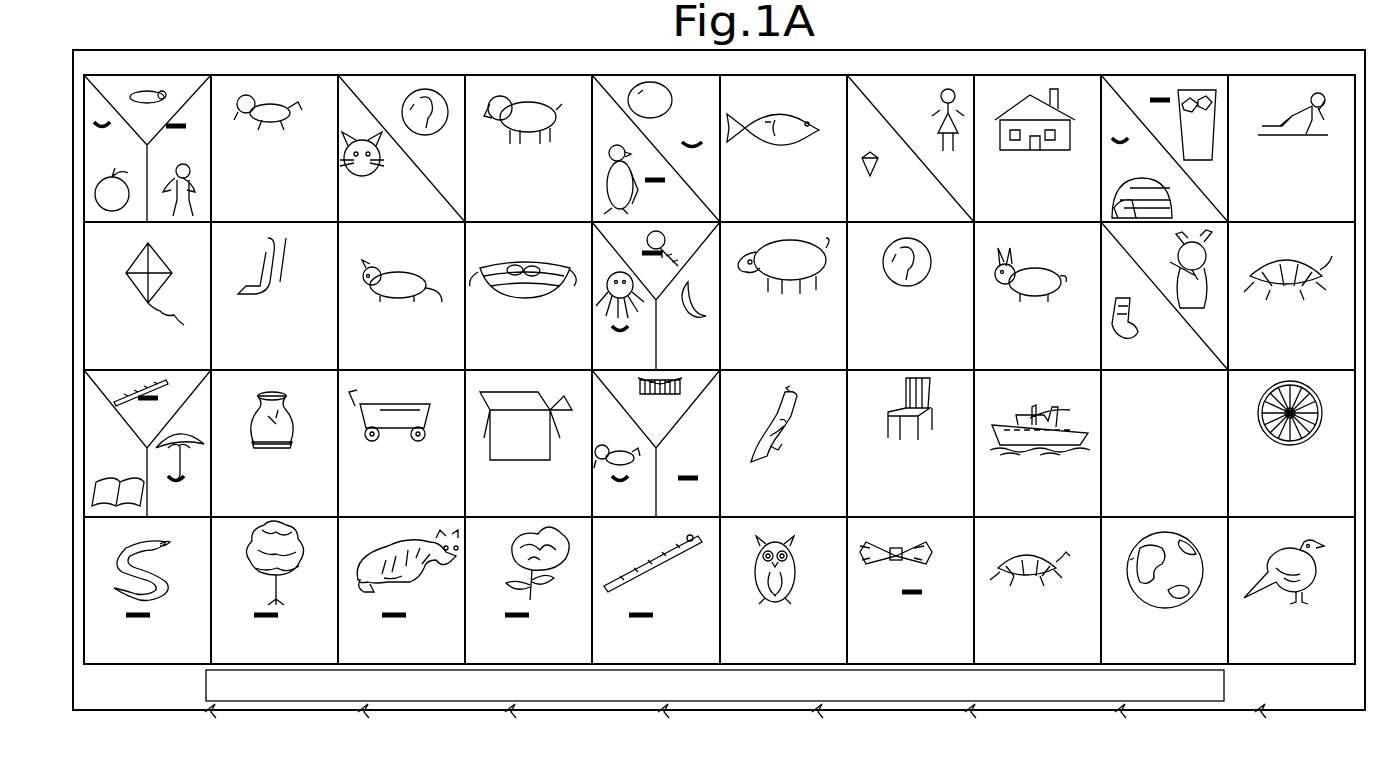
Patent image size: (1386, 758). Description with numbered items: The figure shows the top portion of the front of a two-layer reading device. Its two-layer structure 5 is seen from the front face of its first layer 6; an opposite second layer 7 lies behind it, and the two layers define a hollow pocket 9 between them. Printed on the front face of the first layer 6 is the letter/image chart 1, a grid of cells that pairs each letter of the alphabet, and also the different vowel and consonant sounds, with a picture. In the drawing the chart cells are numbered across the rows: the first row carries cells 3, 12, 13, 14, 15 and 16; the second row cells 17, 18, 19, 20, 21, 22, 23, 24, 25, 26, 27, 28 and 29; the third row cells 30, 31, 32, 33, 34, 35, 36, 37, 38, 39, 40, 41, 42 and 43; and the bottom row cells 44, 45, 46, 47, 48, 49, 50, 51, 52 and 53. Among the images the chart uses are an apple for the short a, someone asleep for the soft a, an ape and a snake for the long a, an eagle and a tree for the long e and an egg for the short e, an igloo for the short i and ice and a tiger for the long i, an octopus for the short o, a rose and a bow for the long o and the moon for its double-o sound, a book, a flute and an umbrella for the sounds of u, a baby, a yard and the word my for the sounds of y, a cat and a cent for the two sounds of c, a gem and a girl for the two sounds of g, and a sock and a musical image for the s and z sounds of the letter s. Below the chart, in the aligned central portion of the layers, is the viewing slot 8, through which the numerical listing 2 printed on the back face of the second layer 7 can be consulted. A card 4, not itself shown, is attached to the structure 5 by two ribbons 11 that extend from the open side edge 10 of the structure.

The letter/image chart 1 is at (1066, 75).
The numerical listing 2 is at (134, 110).
The long a cell 3 is at (180, 159).
The card 4 is at (258, 146).
The two-layer structure 5 is at (172, 38).
The first layer 6 is at (1196, 56).
The second layer 7 is at (515, 146).
The viewing slot 8 is at (206, 690).
The hollow pocket 9 is at (669, 132).
The open side edge 10 is at (1365, 708).
The ribbons 11 is at (1373, 230).
The soft g cell 12 is at (915, 112).
The h cell 13 is at (1026, 146).
The short i cell 14 is at (1137, 158).
The long i cell 15 is at (1168, 118).
The j cell 16 is at (1280, 142).
The k cell 17 is at (136, 297).
The l cell 18 is at (250, 297).
The m cell 19 is at (392, 298).
The n cell 20 is at (522, 298).
The short o cell 21 is at (619, 309).
The long o cell 22 is at (646, 259).
The oo cell 23 is at (687, 312).
The p cell 24 is at (776, 291).
The q cell 25 is at (890, 291).
The r cell 26 is at (1021, 298).
The s cell 27 is at (1142, 307).
The z sound cell 28 is at (1167, 283).
The t cell 29 is at (1282, 297).
The oo (book) cell 30 is at (115, 454).
The long u cell 31 is at (135, 407).
The short u cell 32 is at (180, 464).
The v cell 33 is at (254, 448).
The w cell 34 is at (386, 448).
The x cell 35 is at (520, 448).
The short i (y) cell 36 is at (617, 461).
The y cell 37 is at (647, 406).
The long i (y) cell 38 is at (692, 466).
The z cell 39 is at (760, 448).
The ch cell 40 is at (891, 447).
The sh cell 41 is at (1033, 447).
The th cell 42 is at (1147, 444).
The wh cell 43 is at (1277, 447).
The long a (snake) cell 44 is at (129, 594).
The long e (tree) cell 45 is at (259, 594).
The long i (tiger) cell 46 is at (400, 594).
The long o (rose) cell 47 is at (519, 594).
The long u (flute) cell 48 is at (649, 594).
The ow (owl) cell 49 is at (760, 594).
The ow (bow) cell 50 is at (894, 594).
The ur (turtle) cell 51 is at (1023, 594).
The ear (earth) cell 52 is at (1153, 594).
The ir (bird) cell 53 is at (1278, 594).